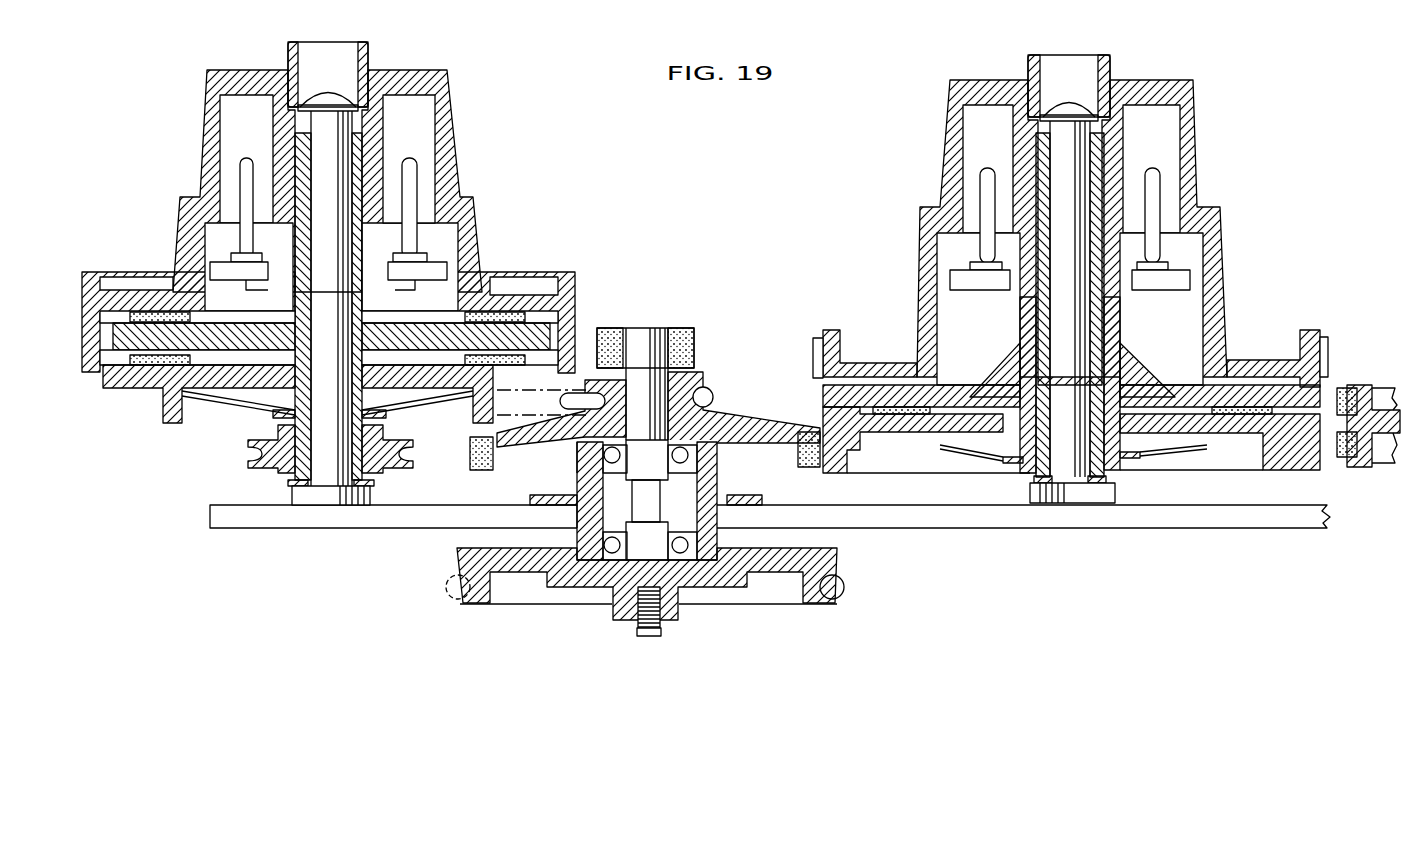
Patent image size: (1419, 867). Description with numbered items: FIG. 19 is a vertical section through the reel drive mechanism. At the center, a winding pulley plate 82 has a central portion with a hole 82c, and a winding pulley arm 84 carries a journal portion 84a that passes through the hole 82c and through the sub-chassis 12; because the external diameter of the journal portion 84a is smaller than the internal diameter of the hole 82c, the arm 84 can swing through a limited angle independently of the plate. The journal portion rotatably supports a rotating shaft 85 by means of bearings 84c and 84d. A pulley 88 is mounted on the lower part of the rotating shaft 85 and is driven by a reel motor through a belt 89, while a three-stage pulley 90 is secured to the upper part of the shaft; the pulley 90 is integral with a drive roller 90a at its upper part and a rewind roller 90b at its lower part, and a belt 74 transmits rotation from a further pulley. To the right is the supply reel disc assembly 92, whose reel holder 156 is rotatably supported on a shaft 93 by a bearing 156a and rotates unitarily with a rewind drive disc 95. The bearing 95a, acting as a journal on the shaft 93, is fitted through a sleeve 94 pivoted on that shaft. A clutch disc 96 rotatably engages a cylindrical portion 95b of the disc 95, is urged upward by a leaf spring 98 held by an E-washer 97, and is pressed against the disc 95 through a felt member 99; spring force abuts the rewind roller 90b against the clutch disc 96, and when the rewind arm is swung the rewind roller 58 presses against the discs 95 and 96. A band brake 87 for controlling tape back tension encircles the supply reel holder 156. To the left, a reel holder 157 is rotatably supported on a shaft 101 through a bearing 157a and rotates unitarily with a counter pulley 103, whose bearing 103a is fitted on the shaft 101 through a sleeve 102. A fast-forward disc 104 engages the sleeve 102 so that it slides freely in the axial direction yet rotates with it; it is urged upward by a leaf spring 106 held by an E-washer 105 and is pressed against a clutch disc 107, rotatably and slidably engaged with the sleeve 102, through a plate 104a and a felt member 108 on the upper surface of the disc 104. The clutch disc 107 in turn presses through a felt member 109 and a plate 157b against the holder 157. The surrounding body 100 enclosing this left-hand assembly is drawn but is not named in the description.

The sub-chassis 12 is at (1128, 528).
The rewind roller 58 is at (1355, 467).
The belt 74 is at (710, 388).
The winding pulley plate 82 is at (530, 499).
The hole 82c is at (732, 505).
The winding pulley arm 84 is at (647, 500).
The journal portion 84a is at (577, 514).
The bearing 84c is at (577, 464).
The bearing 84d is at (610, 555).
The rotating shaft 85 is at (649, 637).
The band brake 87 is at (816, 350).
The pulley 88 is at (480, 604).
The belt 89 is at (450, 596).
The three-stage pulley 90 is at (728, 426).
The drive roller 90a is at (688, 342).
The rewind roller 90b is at (810, 467).
The supply reel disc assembly 92 is at (911, 312).
The shaft 93 is at (1078, 345).
The sleeve 94 is at (1100, 303).
The rewind drive disc 95 is at (1010, 355).
The bearing 95a is at (1071, 486).
The cylindrical portion 95b is at (1042, 484).
The clutch disc 96 is at (930, 433).
The E-washer 97 is at (1012, 463).
The leaf spring 98 is at (972, 460).
The felt member 99 is at (902, 414).
The housing 100 is at (459, 137).
The shaft 101 is at (318, 168).
The sleeve 102 is at (362, 150).
The counter pulley 103 is at (386, 470).
The bearing 103a is at (345, 488).
The fast-forward disc 104 is at (456, 398).
The plate 104a is at (520, 378).
The E-washer 105 is at (275, 418).
The leaf spring 106 is at (242, 395).
The clutch disc 107 is at (290, 306).
The felt member 108 is at (470, 318).
The felt member 109 is at (512, 322).
The reel holder 156 is at (920, 244).
The bearing 156a is at (1052, 128).
The reel holder 157 is at (560, 279).
The bearing 157a is at (304, 110).
The plate 157b is at (495, 312).